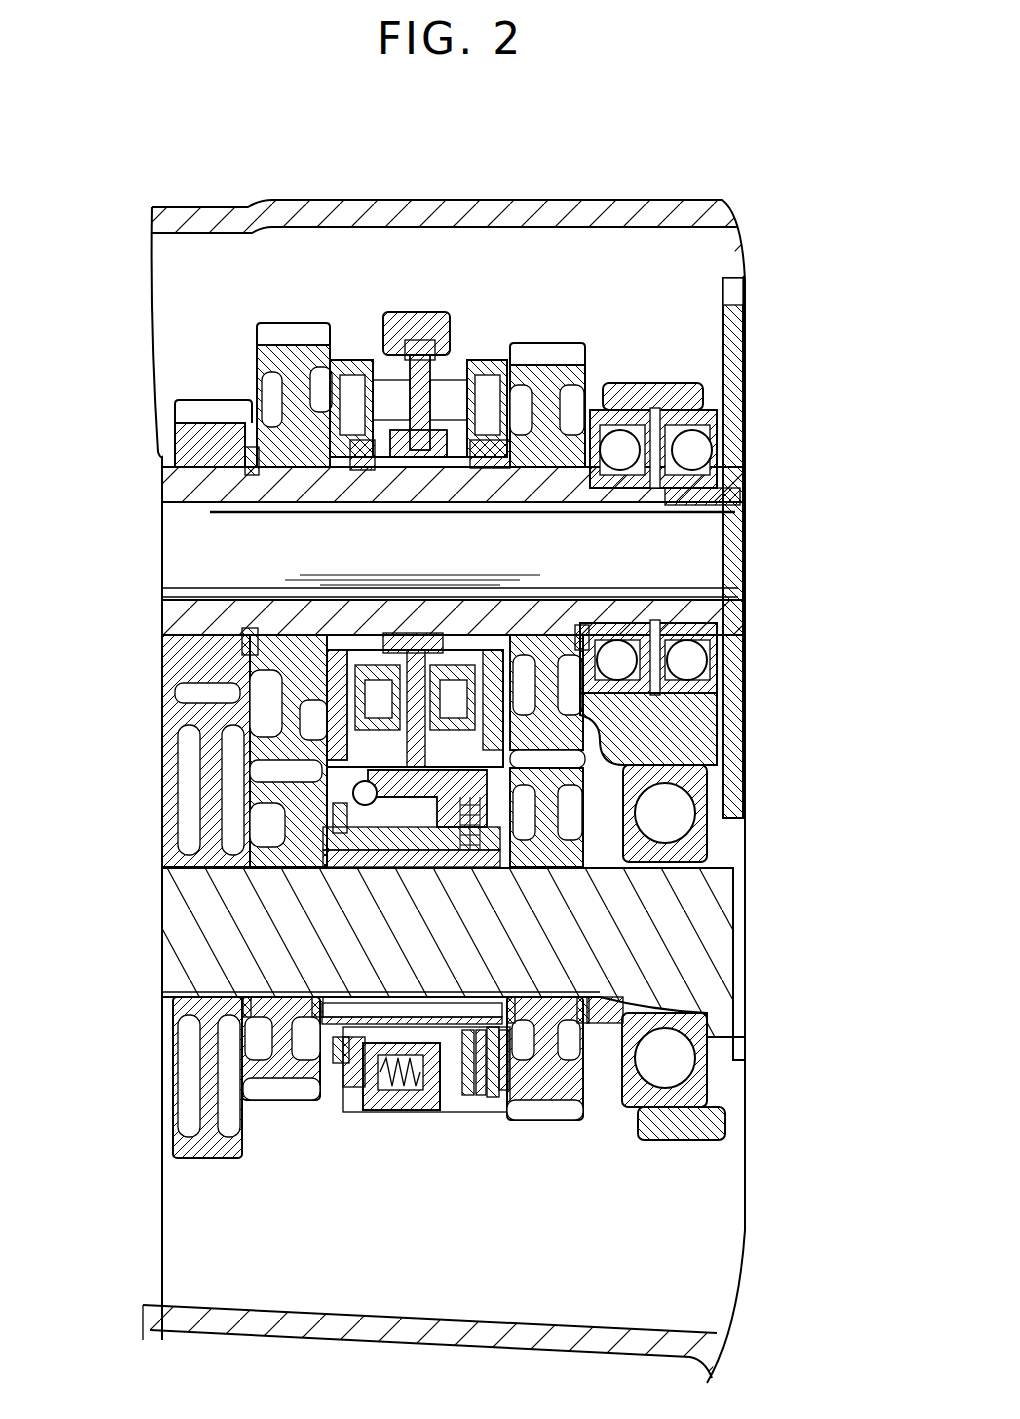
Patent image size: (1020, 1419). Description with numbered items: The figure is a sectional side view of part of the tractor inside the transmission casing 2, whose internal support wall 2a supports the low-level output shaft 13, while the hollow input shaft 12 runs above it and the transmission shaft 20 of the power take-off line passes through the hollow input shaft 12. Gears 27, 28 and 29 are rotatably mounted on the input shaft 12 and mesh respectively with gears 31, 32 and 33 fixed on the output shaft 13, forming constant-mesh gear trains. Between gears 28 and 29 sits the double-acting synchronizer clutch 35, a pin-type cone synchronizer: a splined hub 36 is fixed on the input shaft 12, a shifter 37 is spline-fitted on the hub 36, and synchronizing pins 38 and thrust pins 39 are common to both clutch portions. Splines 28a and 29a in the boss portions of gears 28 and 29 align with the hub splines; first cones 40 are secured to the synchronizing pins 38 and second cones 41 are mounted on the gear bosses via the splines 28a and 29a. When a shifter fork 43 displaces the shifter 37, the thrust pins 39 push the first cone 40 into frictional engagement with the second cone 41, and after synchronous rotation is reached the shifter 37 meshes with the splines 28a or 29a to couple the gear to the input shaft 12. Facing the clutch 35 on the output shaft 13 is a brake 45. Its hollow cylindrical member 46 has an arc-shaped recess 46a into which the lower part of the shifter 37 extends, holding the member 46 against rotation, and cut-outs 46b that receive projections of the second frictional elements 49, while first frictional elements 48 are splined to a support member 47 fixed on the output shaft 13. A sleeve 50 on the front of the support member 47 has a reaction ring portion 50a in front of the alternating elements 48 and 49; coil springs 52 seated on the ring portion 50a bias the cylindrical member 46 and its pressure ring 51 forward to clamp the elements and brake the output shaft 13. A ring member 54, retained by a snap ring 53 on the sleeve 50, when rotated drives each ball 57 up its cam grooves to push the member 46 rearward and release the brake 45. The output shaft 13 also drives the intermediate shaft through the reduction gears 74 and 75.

The transmission casing 2 is at (165, 1322).
The internal support wall 2a is at (665, 1142).
The hollow input shaft 12 is at (168, 482).
The output shaft 13 is at (705, 937).
The transmission shaft 20 is at (175, 556).
The gear 27 is at (210, 408).
The gear 28 is at (293, 340).
The splines 28a is at (340, 648).
The gear 29 is at (570, 355).
The splines 29a is at (493, 470).
The gear 31 is at (198, 1162).
The gear 32 is at (270, 1103).
The gear 33 is at (575, 1125).
The double-acting synchronizer clutch 35 is at (490, 328).
The splined hub 36 is at (432, 470).
The shifter 37 is at (395, 335).
The synchronizing pin 38 is at (440, 385).
The thrust pin 39 is at (503, 632).
The first cone 40 is at (358, 472).
The second cone 41 is at (340, 360).
The shifter fork 43 is at (415, 335).
The brake 45 is at (478, 1155).
The hollow cylindrical member 46 is at (405, 1112).
The arc-shaped recess 46a is at (617, 630).
The cut-outs 46b is at (494, 1100).
The splined annular support member 47 is at (463, 864).
The first frictional elements 48 is at (470, 1040).
The second frictional elements 49 is at (480, 1098).
The sleeve 50 is at (330, 1028).
The reaction ring portion 50a is at (400, 997).
The pressure ring 51 is at (520, 1033).
The coil spring 52 is at (390, 1100).
The snap ring 53 is at (350, 805).
The ring member 54 is at (342, 1065).
The ball 57 is at (355, 785).
The gear 74 is at (742, 1062).
The gear 75 is at (740, 285).